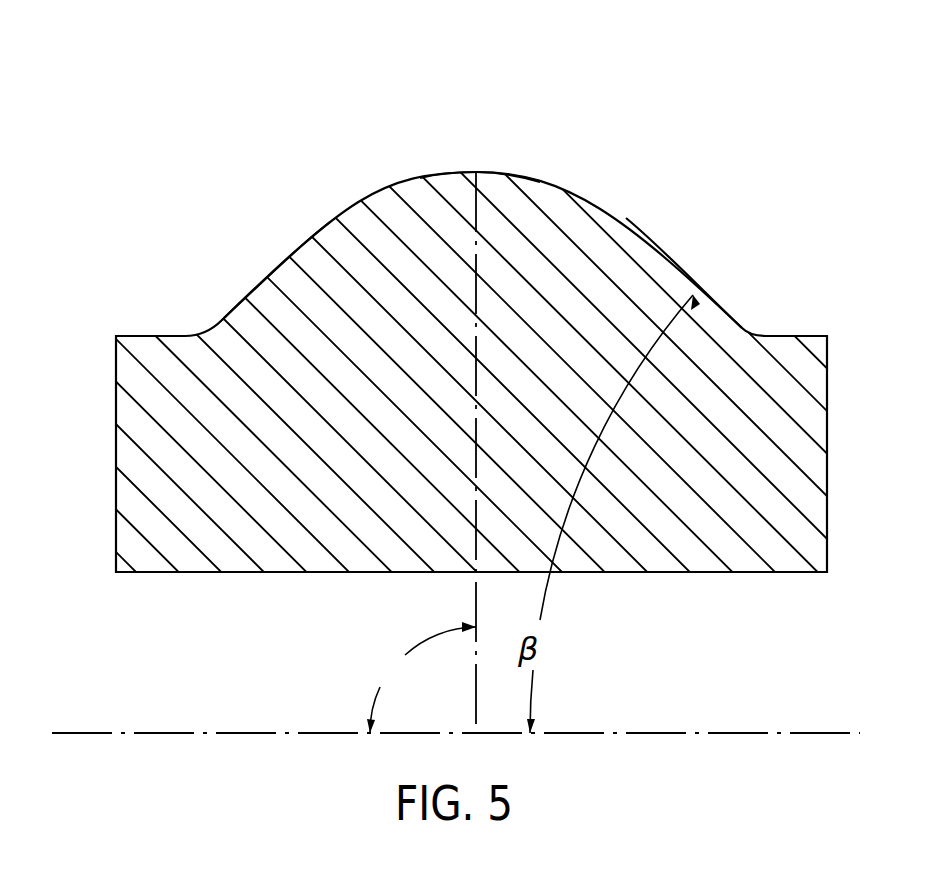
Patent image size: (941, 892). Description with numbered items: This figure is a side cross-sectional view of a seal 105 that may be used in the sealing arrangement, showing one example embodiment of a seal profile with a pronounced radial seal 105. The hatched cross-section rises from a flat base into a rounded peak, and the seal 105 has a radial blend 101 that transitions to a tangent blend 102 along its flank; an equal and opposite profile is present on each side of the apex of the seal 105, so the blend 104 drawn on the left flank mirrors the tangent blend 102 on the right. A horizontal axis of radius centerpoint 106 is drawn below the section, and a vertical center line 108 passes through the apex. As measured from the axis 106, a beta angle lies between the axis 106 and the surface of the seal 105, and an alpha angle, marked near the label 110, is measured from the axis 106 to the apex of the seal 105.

The radial blend 101 is at (746, 332).
The tangent blend 102 is at (695, 292).
The opposite inclined side surface 104 is at (348, 207).
The seal 105 is at (477, 168).
The axis of radius centerpoint 106 is at (723, 731).
The vertical center axis 108 is at (585, 452).
The angle region 110 is at (380, 677).